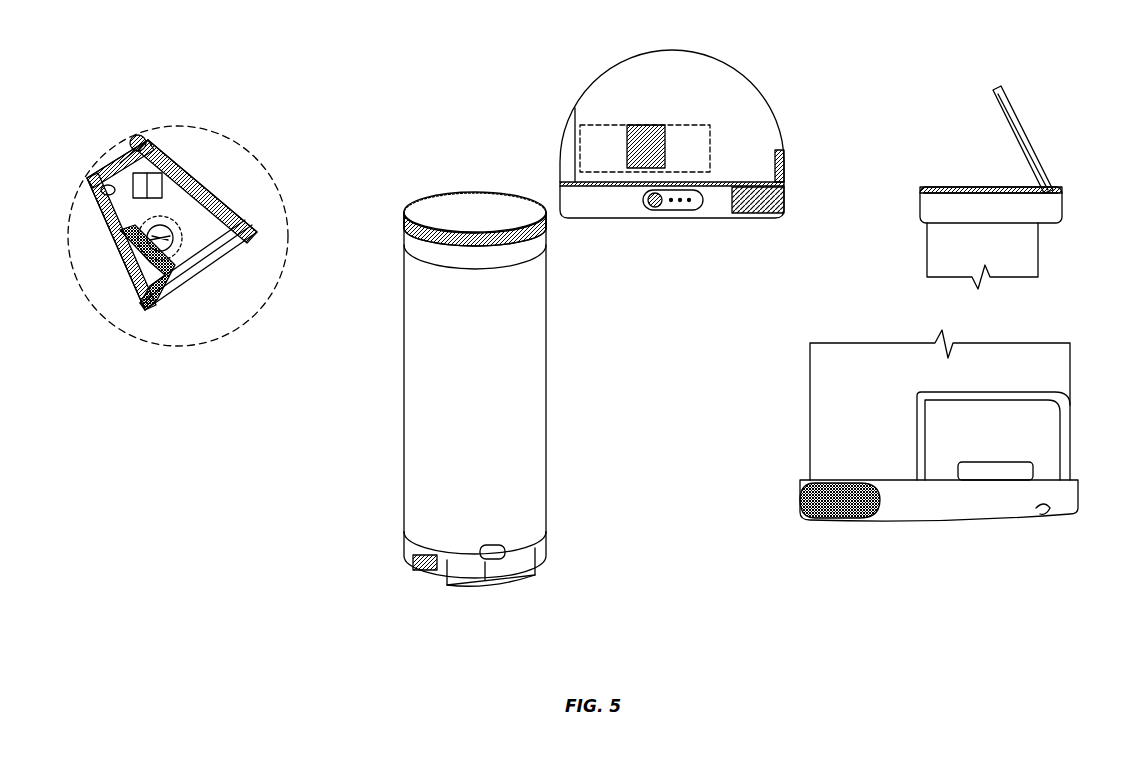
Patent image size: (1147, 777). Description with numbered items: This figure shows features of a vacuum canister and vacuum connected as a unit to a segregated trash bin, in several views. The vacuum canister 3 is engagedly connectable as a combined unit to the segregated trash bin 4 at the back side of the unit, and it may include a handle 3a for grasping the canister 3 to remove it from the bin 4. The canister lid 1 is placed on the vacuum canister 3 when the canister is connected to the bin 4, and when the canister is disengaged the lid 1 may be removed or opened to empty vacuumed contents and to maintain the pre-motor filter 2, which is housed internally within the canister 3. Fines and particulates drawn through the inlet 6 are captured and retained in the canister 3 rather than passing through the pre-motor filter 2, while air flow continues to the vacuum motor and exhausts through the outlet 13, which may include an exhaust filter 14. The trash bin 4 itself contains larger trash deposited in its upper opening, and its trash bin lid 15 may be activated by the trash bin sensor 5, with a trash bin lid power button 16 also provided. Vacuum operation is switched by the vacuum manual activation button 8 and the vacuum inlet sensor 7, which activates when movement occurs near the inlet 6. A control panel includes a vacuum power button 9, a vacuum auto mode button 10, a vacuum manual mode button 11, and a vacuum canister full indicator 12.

The canister lid 1 is at (223, 190).
The pre-motor filter 2 is at (138, 262).
The vacuum canister 3 is at (192, 267).
The handle 3a is at (1030, 475).
The segregated trash bin 4 is at (122, 163).
The trash bin sensor 5 is at (490, 245).
The inlet 6 is at (465, 570).
The vacuum inlet sensor 7 is at (785, 208).
The vacuum manual activation button 8 is at (785, 160).
The vacuum power button 9 is at (640, 205).
The vacuum auto mode button 10 is at (662, 212).
The vacuum manual mode button 11 is at (680, 190).
The vacuum canister full indicator 12 is at (695, 210).
The outlet 13 is at (130, 147).
The exhaust filter 14 is at (855, 525).
The trash bin lid 15 is at (512, 199).
The trash bin lid power button 16 is at (470, 190).